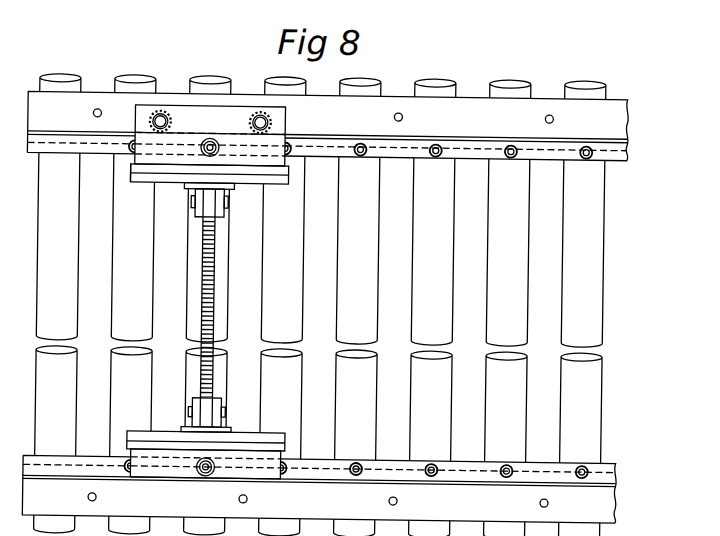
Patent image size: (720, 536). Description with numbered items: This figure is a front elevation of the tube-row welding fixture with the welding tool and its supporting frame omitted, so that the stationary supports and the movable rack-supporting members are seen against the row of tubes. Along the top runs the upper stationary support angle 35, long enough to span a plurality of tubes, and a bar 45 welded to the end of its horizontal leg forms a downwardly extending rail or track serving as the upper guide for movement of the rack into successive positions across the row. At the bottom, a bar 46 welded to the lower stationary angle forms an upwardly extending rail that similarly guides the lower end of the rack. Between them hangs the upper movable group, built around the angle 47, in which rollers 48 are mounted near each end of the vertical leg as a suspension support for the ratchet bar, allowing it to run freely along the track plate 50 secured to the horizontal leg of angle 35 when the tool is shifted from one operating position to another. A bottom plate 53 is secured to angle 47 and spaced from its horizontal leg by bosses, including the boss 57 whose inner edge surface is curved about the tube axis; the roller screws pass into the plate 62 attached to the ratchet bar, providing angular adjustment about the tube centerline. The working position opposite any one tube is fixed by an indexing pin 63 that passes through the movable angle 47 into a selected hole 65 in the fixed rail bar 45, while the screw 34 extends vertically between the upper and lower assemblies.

The adjusting screw 34 is at (218, 283).
The angle 35 is at (471, 93).
The bar 45 is at (486, 155).
The bar 46 is at (472, 455).
The angle 47 is at (288, 120).
The rollers 48 is at (260, 106).
The track plate 50 is at (611, 130).
The bottom plate 53 is at (150, 183).
The boss 57 is at (132, 167).
The plate 62 is at (198, 190).
The indexing pin 63 is at (212, 136).
The hole 65 is at (436, 150).